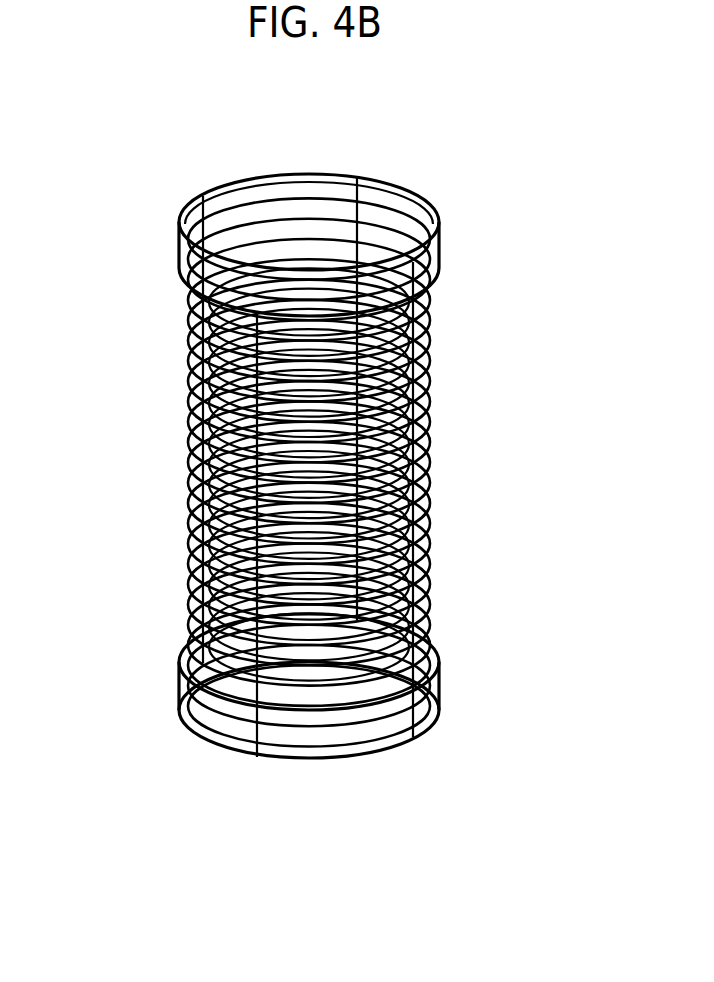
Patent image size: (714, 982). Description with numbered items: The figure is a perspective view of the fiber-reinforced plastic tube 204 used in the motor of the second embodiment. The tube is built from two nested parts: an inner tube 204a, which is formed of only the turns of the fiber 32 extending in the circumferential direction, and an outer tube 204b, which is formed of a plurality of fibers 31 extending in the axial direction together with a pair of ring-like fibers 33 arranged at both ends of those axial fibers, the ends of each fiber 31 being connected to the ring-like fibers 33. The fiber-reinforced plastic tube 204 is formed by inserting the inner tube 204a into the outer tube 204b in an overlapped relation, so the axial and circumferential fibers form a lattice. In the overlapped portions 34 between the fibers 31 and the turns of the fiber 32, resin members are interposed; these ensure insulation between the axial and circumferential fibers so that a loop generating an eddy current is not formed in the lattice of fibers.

The fiber-reinforced plastic tube 204 is at (458, 155).
The inner tube 204a is at (173, 422).
The outer tube 204b is at (448, 680).
The fibers extending in the axial direction 31 is at (410, 688).
The fiber extending in the circumferential direction 32 is at (272, 200).
The ring-like fibers 33 is at (177, 244).
The overlapped portions 34 is at (187, 555).